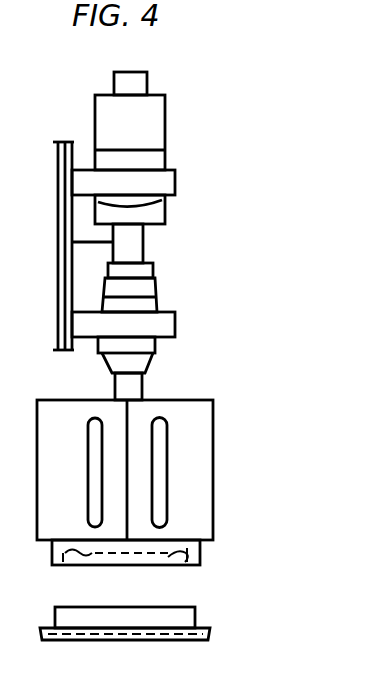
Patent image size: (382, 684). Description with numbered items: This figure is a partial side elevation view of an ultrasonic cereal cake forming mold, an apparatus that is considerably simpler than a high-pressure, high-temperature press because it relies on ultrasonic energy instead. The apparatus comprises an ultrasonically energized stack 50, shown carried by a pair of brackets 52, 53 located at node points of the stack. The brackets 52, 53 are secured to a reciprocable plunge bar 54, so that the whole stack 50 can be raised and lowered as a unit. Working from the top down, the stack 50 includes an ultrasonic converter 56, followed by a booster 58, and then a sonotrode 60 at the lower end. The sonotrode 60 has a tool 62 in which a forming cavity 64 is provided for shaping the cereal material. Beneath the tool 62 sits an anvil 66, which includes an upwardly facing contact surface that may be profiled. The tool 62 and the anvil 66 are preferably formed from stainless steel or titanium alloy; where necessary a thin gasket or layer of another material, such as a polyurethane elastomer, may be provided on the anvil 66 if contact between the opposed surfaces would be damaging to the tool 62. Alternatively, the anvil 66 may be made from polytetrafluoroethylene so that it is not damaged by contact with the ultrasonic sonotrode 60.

The ultrasonically energized stack 50 is at (165, 194).
The bracket 52 is at (150, 158).
The bracket 53 is at (155, 322).
The reciprocable plunge bar 54 is at (113, 242).
The ultrasonic converter 56 is at (145, 113).
The booster 58 is at (135, 288).
The sonotrode 60 is at (196, 433).
The tool 62 is at (200, 557).
The forming cavity 64 is at (167, 566).
The anvil 66 is at (180, 620).